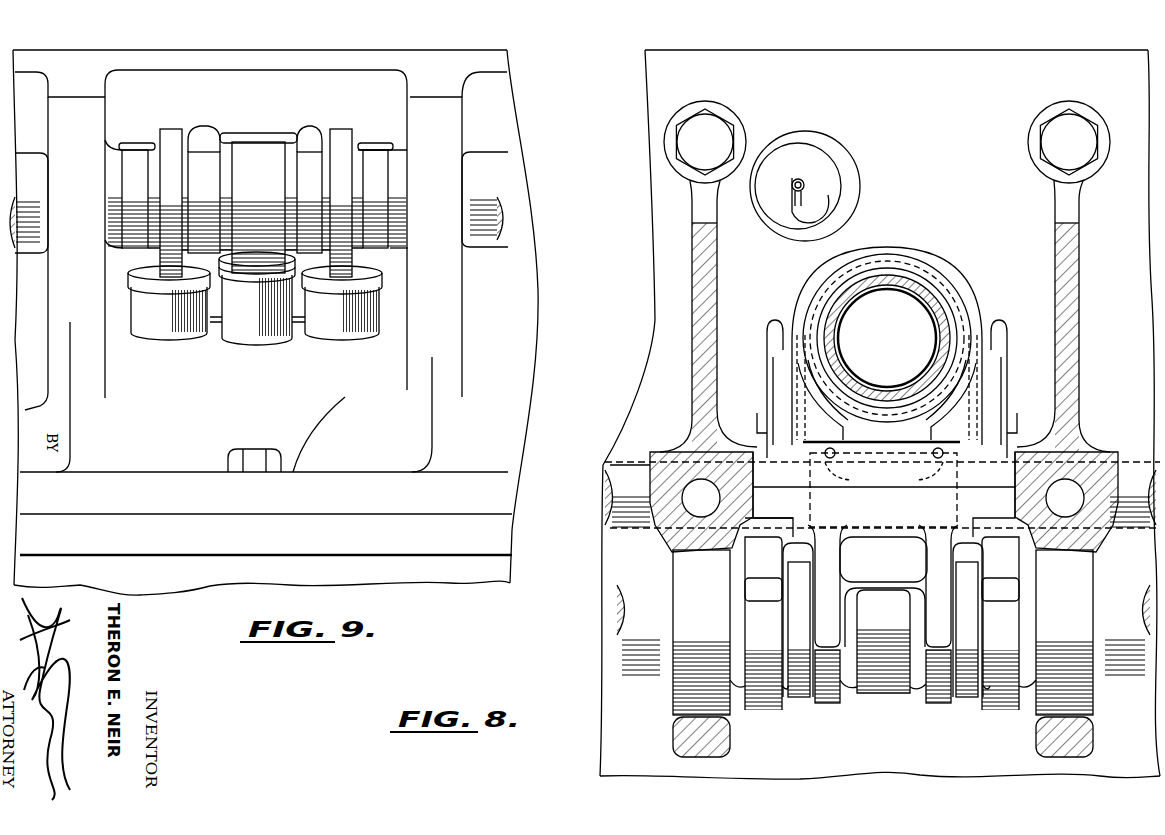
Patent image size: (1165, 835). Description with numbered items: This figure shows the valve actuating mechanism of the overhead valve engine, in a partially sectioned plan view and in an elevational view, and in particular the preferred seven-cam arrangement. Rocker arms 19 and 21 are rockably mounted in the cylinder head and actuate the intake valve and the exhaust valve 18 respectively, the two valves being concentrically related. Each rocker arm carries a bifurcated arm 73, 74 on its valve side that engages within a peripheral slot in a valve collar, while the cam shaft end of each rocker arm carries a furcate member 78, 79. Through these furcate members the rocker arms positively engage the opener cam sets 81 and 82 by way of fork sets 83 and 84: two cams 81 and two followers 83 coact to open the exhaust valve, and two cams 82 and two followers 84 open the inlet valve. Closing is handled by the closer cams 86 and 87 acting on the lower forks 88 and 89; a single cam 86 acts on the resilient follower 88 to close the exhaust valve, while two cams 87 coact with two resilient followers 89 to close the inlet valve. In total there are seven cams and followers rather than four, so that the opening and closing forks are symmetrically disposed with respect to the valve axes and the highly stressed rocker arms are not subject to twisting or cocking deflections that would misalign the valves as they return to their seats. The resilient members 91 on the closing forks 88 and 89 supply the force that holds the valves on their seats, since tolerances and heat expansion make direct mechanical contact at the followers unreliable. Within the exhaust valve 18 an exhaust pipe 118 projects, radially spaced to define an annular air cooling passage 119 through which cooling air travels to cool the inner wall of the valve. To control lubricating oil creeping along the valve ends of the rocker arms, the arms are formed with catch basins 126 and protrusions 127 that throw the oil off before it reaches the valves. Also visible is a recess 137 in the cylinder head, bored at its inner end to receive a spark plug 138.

In FIG. 9, the fork set 84 is at (445, 43).
In FIG. 8, the fork set 84 is at (773, 599).
In FIG. 9, the fork set 83 is at (343, 108).
In FIG. 8, the fork set 83 is at (839, 620).
In FIG. 9, the closer cam set 87 is at (179, 182).
In FIG. 9, the closer cam 86 is at (268, 172).
In FIG. 9, the resilient members 91 is at (127, 291).
In FIG. 9, the lower fork 88 is at (216, 333).
In FIG. 9, the lower forks 89 is at (440, 387).
In FIG. 8, the recess 137 is at (816, 162).
In FIG. 8, the spark plug 138 is at (828, 190).
In FIG. 8, the exhaust valve 18 is at (851, 300).
In FIG. 8, the exhaust pipe 118 is at (874, 288).
In FIG. 8, the annular air cooling passage 119 is at (919, 300).
In FIG. 8, the rocker arm 19 is at (765, 357).
In FIG. 8, the rocker arm 21 is at (774, 326).
In FIG. 8, the bifurcated arm 73 is at (772, 382).
In FIG. 8, the bifurcated arm 74 is at (800, 412).
In FIG. 8, the protrusions 127 is at (978, 434).
In FIG. 8, the catch basins 126 is at (868, 466).
In FIG. 8, the furcate member 79 is at (848, 514).
In FIG. 8, the furcate member 78 is at (772, 560).
In FIG. 8, the opener cam set 82 is at (757, 711).
In FIG. 8, the opener cam set 81 is at (823, 705).